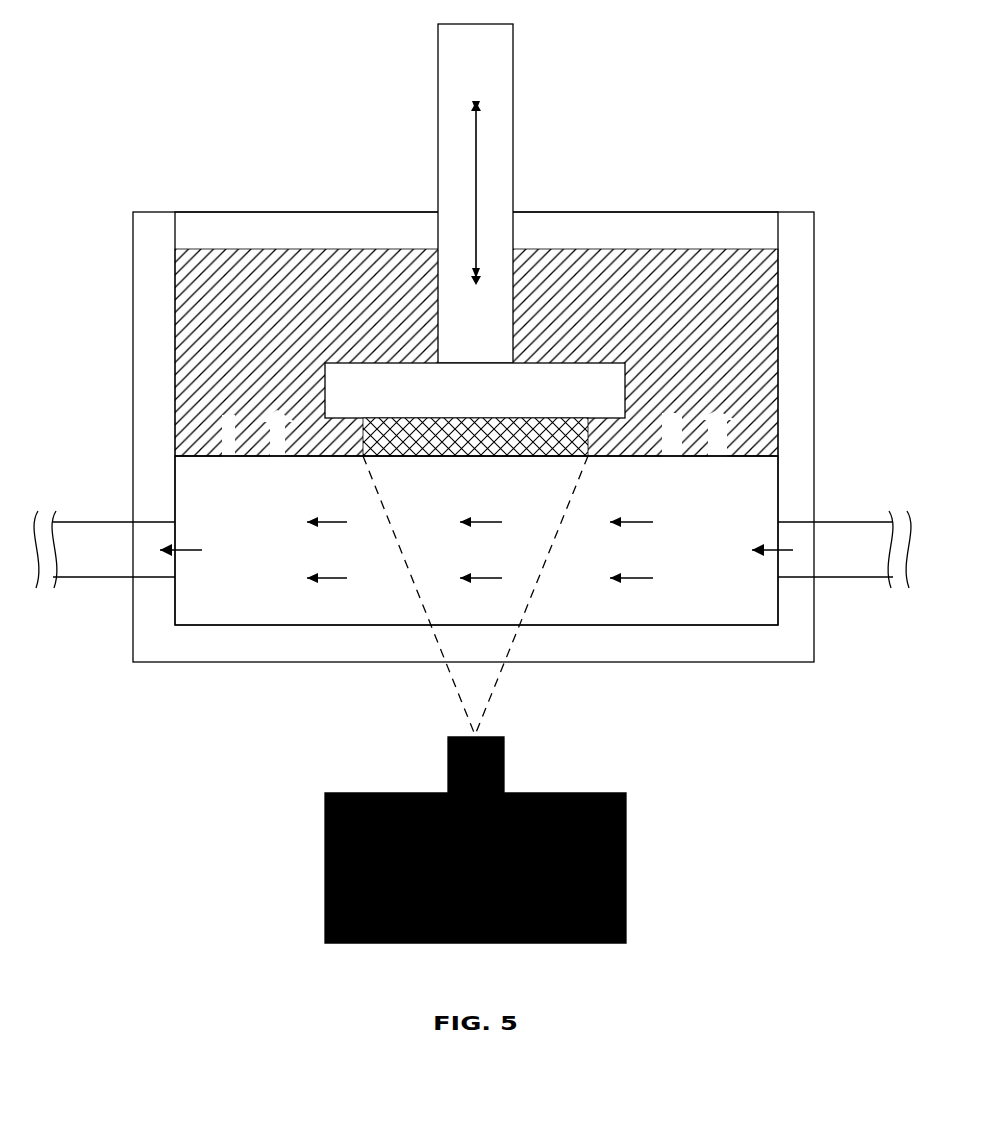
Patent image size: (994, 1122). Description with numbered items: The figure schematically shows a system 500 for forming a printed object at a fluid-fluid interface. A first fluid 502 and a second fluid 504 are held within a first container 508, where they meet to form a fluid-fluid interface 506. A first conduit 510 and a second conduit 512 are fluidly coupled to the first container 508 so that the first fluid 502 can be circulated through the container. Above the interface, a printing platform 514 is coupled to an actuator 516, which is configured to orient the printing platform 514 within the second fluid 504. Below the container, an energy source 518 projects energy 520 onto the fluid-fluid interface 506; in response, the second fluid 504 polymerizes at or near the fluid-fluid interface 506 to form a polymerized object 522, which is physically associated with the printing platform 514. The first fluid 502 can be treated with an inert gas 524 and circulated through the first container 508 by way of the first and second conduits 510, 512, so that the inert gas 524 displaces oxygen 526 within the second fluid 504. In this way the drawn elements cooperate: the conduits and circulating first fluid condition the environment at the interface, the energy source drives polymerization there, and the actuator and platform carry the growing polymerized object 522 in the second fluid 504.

The system 500 is at (268, 124).
The first fluid 502 is at (722, 607).
The second fluid 504 is at (313, 262).
The fluid-fluid interface 506 is at (320, 455).
The first container 508 is at (778, 235).
The first conduit 510 is at (850, 578).
The second conduit 512 is at (97, 578).
The printing platform 514 is at (552, 400).
The actuator 516 is at (513, 207).
The energy source 518 is at (548, 793).
The energy 520 is at (448, 673).
The polymerized object 522 is at (437, 447).
The inert gas 524 is at (268, 442).
The oxygen 526 is at (222, 443).